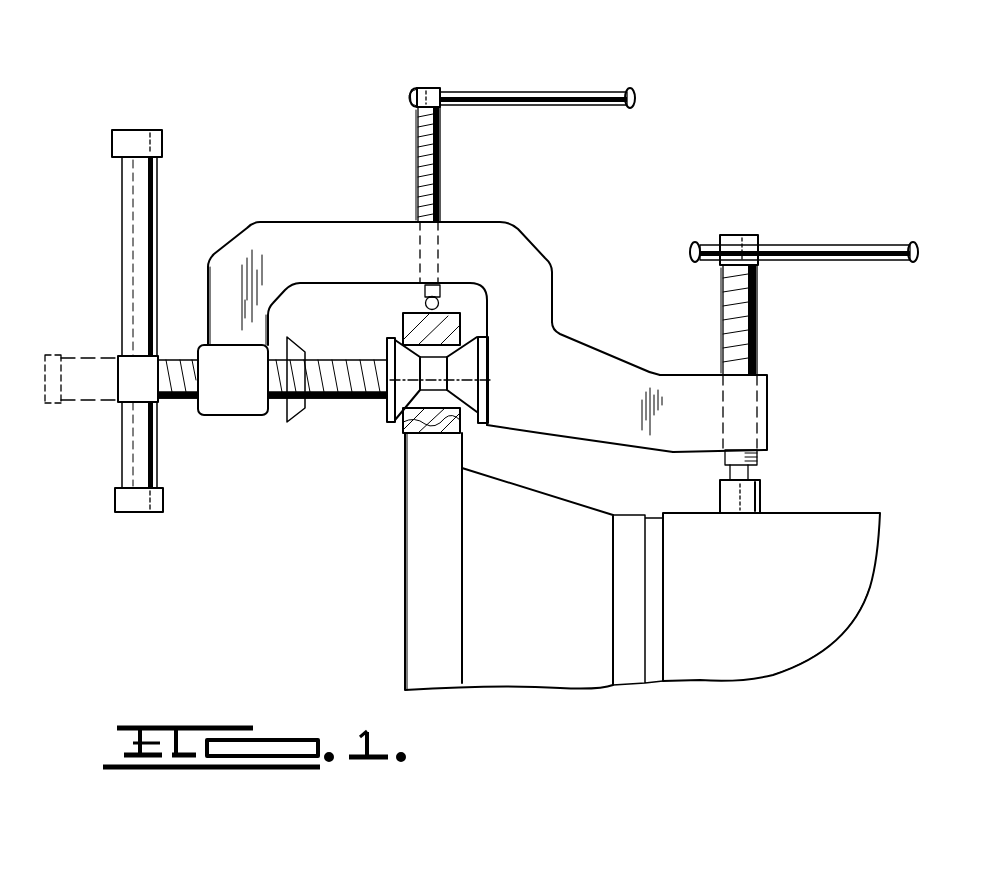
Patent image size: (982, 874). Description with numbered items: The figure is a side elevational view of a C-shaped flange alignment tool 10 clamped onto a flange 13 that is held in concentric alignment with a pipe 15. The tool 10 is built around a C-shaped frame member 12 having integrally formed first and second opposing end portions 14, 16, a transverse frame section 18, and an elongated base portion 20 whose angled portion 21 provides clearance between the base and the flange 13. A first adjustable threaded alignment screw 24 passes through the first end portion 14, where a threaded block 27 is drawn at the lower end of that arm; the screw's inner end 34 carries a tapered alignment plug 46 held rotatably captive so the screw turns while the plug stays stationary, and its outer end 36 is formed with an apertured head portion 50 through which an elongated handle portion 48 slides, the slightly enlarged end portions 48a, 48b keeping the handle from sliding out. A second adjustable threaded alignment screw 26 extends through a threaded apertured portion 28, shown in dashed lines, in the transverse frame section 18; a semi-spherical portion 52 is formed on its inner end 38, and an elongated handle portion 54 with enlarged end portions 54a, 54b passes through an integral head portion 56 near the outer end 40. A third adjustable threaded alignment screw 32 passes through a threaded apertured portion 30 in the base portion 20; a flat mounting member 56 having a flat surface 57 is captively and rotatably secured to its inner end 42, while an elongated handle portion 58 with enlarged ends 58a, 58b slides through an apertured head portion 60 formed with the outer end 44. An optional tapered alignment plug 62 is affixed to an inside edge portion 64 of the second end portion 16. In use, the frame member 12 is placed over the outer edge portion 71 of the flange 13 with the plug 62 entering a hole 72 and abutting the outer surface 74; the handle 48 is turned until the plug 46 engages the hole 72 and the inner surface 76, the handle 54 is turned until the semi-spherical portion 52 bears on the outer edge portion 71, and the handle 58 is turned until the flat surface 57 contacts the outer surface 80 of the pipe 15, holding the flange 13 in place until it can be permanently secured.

The C-shaped flange alignment tool 10 is at (744, 146).
The C-shaped frame member 12 is at (293, 205).
The flange 13 is at (394, 612).
The first opposing end portion 14 is at (220, 323).
The pipe 15 is at (757, 652).
The second opposing end portion 16 is at (508, 384).
The transverse frame section 18 is at (338, 237).
The elongated base portion 20 is at (592, 380).
The angled portion 21 is at (540, 433).
The first adjustable threaded alignment screw 24 is at (326, 410).
The second adjustable threaded alignment screw 26 is at (444, 189).
The jaw block 27 is at (225, 418).
The threaded apertured portion 28 is at (442, 247).
The threaded apertured portion 30 is at (752, 386).
The third adjustable threaded alignment screw 32 is at (769, 319).
The inner end 34 is at (378, 410).
The outer end 36 is at (183, 406).
The inner end 38 is at (418, 291).
The outer end 40 is at (413, 127).
The inner end 42 is at (770, 460).
The outer end 44 is at (718, 280).
The tapered alignment plug 46 is at (382, 347).
The elongated handle portion 48 is at (116, 210).
The end portion 48a is at (137, 138).
The end portion 48b is at (141, 513).
The apertured head portion 50 is at (130, 372).
The semi-spherical portion 52 is at (424, 307).
The elongated handle portion 54 is at (513, 86).
The enlarged end portion 54a is at (634, 92).
The enlarged end portion 54b is at (410, 97).
The head portion / flat mounting member 56 is at (427, 90).
The flat surface 57 is at (733, 516).
The elongated handle portion 58 is at (823, 238).
The end 58a is at (913, 244).
The end 58b is at (690, 247).
The apertured head portion 60 is at (742, 240).
The tapered alignment plug 62 is at (463, 367).
The inside edge portion 64 is at (486, 396).
The outer edge portion 71 is at (465, 303).
The hole 72 is at (428, 426).
The outer surface 74 is at (467, 440).
The inner surface 76 is at (405, 537).
The outer surface 80 is at (826, 512).